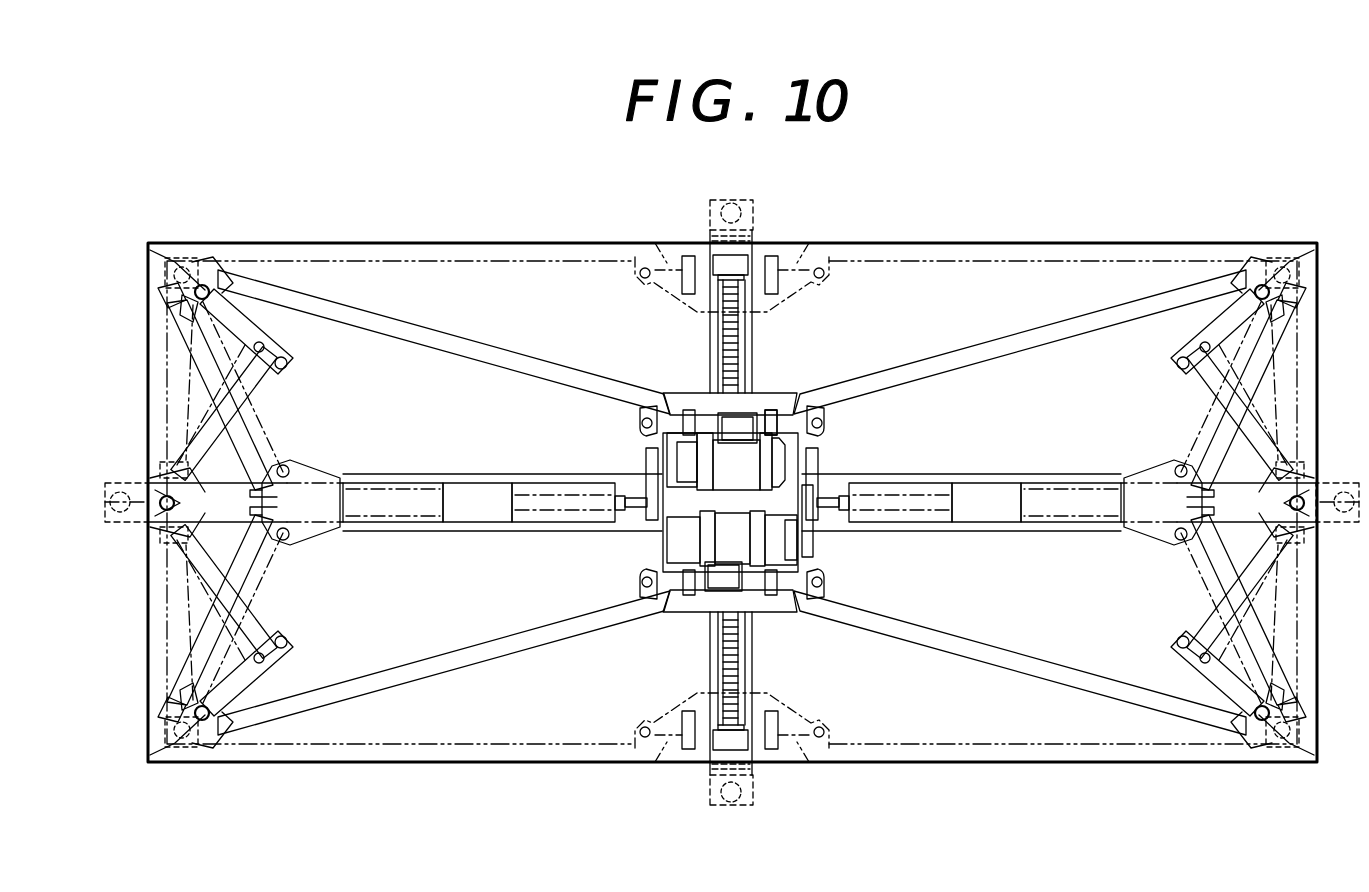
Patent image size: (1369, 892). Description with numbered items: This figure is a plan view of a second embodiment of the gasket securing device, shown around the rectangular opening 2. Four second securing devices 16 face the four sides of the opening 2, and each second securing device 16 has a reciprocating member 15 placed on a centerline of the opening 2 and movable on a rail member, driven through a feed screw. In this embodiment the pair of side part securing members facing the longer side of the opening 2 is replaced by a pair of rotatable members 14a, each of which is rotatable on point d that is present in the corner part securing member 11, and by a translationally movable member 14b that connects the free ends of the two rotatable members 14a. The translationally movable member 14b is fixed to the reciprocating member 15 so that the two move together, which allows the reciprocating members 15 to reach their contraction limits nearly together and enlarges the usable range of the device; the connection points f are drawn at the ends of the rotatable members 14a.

The rectangular opening 2 is at (935, 282).
The corner part securing member 11 is at (1172, 350).
The rotatable member 14a is at (400, 335).
The translationally movable member 14b is at (763, 400).
The reciprocating member 15 is at (745, 432).
The second securing device 16 is at (842, 425).
The point d is at (215, 262).
The pivot ear f is at (643, 421).